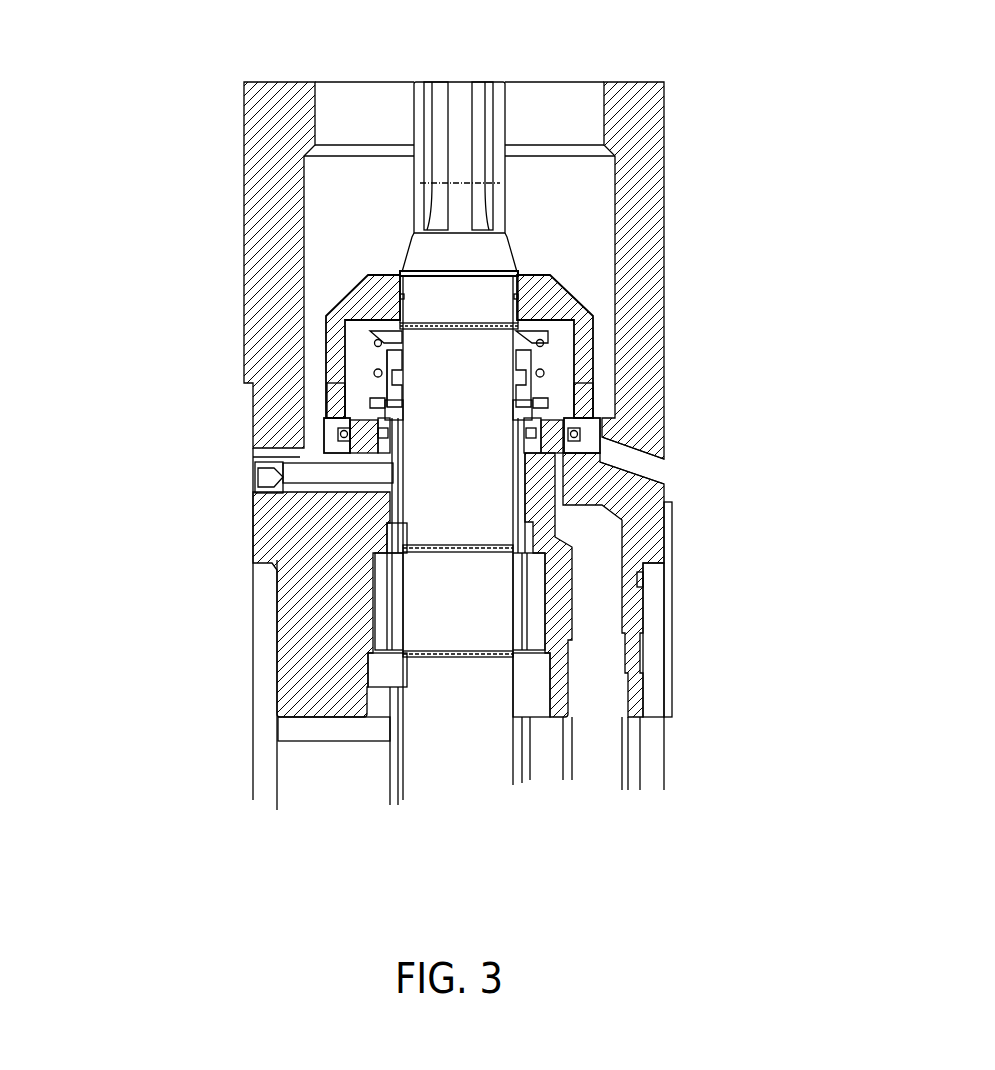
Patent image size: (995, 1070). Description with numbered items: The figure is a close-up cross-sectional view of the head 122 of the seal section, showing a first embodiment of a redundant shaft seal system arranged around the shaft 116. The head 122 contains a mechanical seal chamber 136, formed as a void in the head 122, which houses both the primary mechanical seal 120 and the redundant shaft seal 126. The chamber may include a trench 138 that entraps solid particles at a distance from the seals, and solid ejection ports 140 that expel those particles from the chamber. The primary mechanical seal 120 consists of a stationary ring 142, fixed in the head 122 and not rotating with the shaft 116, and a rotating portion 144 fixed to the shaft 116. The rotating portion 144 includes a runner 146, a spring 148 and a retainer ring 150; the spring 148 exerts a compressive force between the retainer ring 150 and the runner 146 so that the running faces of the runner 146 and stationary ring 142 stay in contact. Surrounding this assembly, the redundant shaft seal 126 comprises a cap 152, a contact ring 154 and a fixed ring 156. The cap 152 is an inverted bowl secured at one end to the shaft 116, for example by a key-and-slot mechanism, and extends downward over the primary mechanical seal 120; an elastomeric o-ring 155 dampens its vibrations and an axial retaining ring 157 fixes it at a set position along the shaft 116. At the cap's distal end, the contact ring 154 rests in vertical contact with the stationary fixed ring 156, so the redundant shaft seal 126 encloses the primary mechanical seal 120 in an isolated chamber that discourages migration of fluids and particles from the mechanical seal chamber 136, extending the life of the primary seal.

The shaft 116 is at (461, 108).
The primary mechanical seal 120 is at (560, 372).
The head 122 is at (760, 213).
The redundant shaft seal 126 is at (592, 285).
The mechanical seal chamber 136 is at (557, 167).
The trench 138 is at (612, 432).
The solid ejection ports 140 is at (647, 488).
The stationary ring 142 is at (398, 440).
The rotating portion 144 is at (352, 360).
The runner 146 is at (393, 406).
The spring 148 is at (374, 371).
The retainer ring 150 is at (365, 315).
The cap 152 is at (368, 332).
The contact ring 154 is at (337, 405).
The elastomeric o-ring 155 is at (517, 273).
The fixed ring 156 is at (330, 440).
The axial retaining ring 157 is at (403, 273).